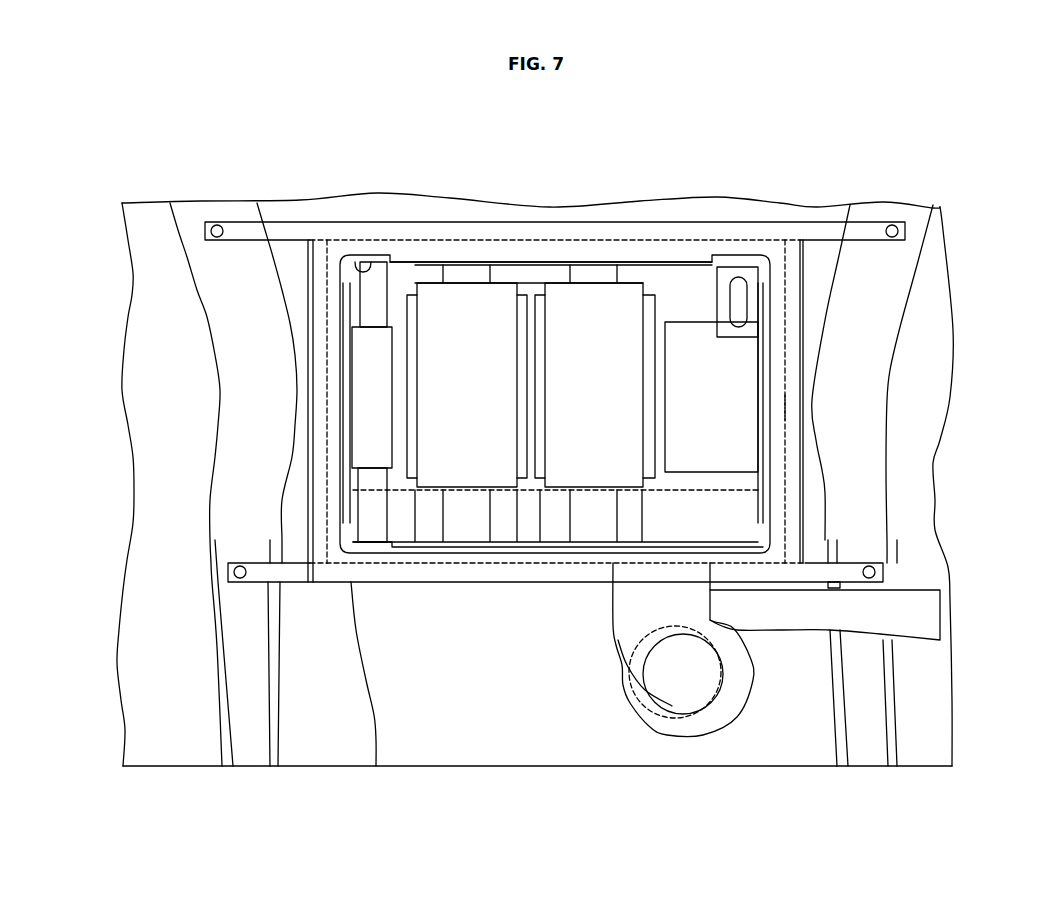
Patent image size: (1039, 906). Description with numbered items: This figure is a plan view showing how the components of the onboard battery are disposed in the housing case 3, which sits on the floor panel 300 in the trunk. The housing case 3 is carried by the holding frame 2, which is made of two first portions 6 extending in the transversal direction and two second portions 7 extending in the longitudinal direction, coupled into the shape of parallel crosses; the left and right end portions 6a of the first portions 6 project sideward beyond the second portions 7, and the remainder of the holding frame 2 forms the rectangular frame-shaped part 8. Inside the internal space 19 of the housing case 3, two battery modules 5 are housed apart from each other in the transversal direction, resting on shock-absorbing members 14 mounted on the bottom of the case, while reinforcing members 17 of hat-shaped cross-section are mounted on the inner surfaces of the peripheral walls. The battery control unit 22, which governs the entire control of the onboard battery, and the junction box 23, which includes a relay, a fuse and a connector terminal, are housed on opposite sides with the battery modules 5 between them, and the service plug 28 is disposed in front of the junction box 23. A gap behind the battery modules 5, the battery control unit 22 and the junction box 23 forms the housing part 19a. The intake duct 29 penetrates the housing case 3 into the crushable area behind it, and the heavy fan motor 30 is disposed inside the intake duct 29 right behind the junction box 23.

The floor panel 300 is at (792, 752).
The holding frame 2 is at (815, 222).
The housing case 3 is at (777, 222).
The battery module 5 is at (468, 300).
The first portion 6 is at (865, 222).
The end portion 6a is at (238, 222).
The second portion 7 is at (345, 402).
The rectangular frame-shaped part 8 is at (808, 405).
The shock-absorbing member 14 is at (380, 268).
The reinforcing member 17 is at (560, 262).
The internal space 19 is at (365, 262).
The housing part 19a is at (380, 540).
The battery control unit 22 is at (363, 368).
The junction box 23 is at (735, 365).
The service plug 28 is at (735, 285).
The intake duct 29 is at (623, 598).
The fan motor 30 is at (636, 700).